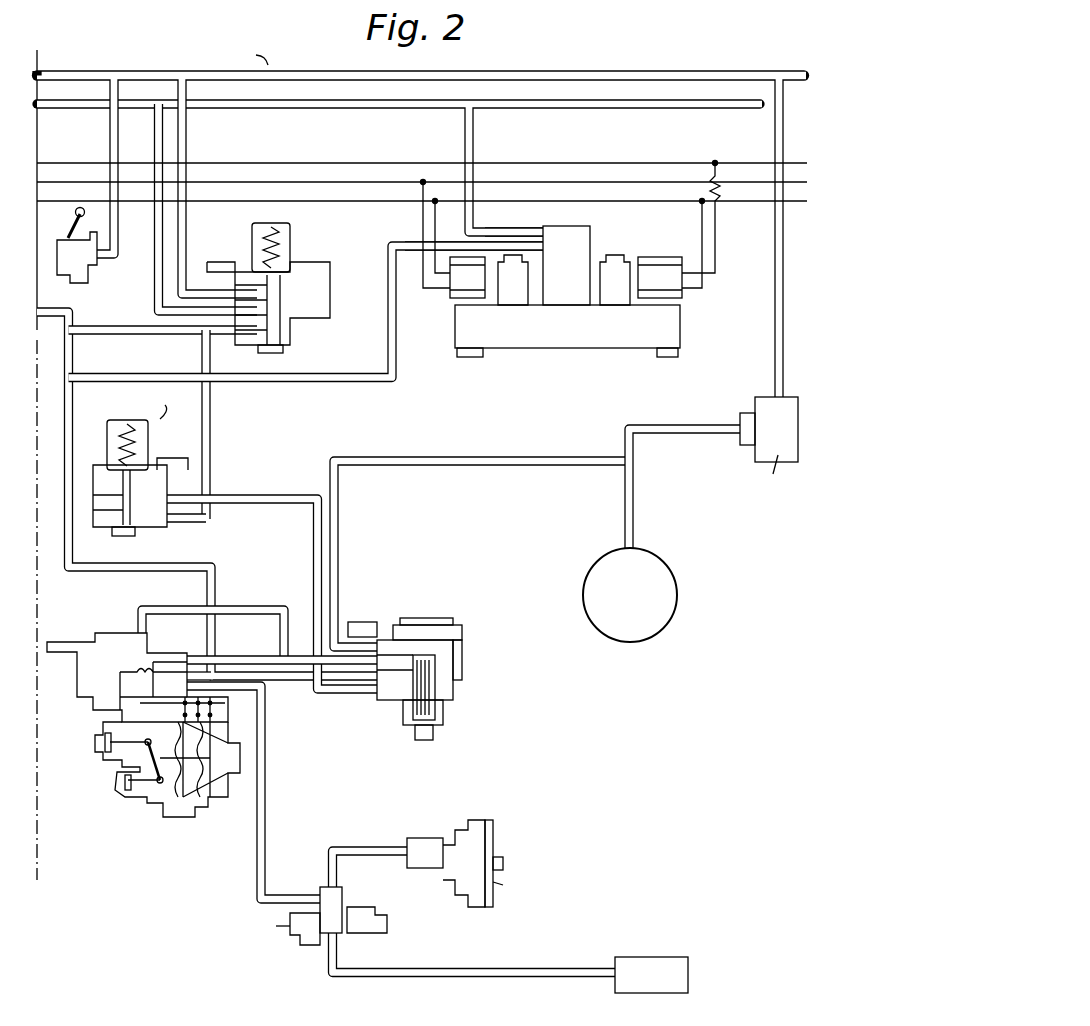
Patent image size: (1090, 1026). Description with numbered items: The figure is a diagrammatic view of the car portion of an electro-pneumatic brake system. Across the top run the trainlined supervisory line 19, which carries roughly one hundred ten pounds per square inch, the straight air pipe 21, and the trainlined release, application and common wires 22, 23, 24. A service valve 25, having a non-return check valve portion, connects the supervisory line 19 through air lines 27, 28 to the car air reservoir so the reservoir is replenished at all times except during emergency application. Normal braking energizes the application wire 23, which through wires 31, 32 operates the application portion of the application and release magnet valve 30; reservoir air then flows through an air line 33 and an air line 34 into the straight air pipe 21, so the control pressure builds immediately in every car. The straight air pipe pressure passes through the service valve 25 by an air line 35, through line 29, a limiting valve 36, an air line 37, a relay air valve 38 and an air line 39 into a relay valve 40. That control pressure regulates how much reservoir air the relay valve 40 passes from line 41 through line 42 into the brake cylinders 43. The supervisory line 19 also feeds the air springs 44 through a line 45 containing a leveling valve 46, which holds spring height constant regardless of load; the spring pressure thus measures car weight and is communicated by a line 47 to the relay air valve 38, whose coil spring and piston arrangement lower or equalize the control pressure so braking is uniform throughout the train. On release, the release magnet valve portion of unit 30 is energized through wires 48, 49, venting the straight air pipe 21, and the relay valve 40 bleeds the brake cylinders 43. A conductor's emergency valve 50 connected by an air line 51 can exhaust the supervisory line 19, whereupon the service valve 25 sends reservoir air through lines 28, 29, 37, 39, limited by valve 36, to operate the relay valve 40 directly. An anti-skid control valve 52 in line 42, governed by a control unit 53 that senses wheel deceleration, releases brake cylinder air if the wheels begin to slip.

The supervisory line 19 is at (521, 70).
The straight air pipe 21 is at (586, 100).
The release wire 22 is at (410, 161).
The application wire 23 is at (430, 180).
The common wire 24 is at (354, 203).
The service valve 25 is at (295, 321).
The air line 27 is at (180, 229).
The air line 28 is at (115, 328).
The line 29 is at (211, 442).
The application and release magnet valve 30 is at (675, 327).
The wire 31 is at (418, 254).
The wire 32 is at (440, 221).
The air line 33 is at (336, 382).
The air line 34 is at (476, 128).
The air line 35 is at (156, 141).
The limiting valve 36 is at (160, 526).
The air line 37 is at (313, 555).
The relay air valve 38 is at (456, 657).
The air line 39 is at (323, 692).
The relay valve 40 is at (166, 808).
The line 41 is at (118, 572).
The line 42 is at (267, 789).
The brake cylinders 43 is at (616, 958).
The air springs 44 is at (678, 587).
The line 45 is at (775, 292).
The leveling valve 46 is at (763, 408).
The line 47 is at (463, 458).
The wire 48 is at (774, 235).
The wire 49 is at (700, 229).
The conductor's emergency valve 50 is at (92, 268).
The air line 51 is at (112, 232).
The anti-skid control valve 52 is at (386, 920).
The control unit 53 is at (494, 839).